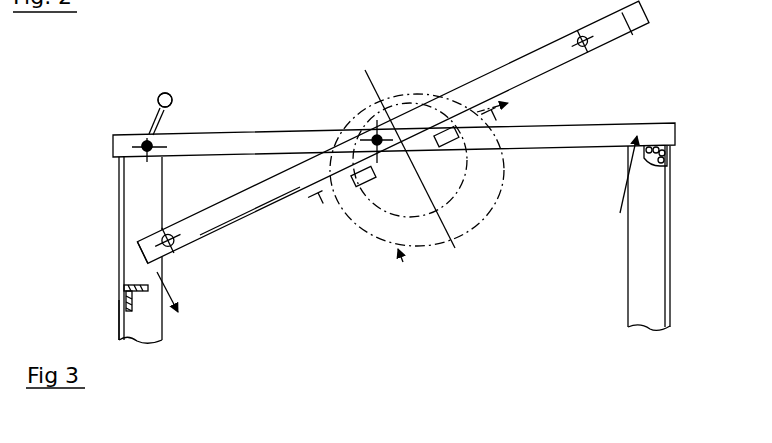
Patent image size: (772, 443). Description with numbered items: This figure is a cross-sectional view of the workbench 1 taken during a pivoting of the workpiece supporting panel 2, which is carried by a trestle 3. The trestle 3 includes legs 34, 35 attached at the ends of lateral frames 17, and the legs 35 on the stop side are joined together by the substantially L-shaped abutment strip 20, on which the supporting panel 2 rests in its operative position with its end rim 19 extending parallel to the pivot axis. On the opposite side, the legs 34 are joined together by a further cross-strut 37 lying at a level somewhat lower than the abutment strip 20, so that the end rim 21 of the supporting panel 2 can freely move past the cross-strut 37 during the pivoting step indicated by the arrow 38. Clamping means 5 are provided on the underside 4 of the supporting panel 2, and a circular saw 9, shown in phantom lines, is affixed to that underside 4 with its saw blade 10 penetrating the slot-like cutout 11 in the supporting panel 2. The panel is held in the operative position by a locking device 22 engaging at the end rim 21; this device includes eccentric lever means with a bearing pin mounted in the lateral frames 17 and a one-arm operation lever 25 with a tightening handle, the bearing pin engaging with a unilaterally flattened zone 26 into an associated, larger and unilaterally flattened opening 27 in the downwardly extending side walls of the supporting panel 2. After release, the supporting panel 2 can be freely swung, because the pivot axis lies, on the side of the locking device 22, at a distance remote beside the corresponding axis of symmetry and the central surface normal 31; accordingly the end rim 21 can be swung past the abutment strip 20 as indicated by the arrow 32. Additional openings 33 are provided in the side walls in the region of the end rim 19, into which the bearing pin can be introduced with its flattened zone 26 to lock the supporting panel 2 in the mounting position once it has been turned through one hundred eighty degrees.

The workbench 1 is at (282, 75).
The workpiece supporting panel 2 is at (522, 72).
The trestle 3 is at (118, 236).
The underside 4 is at (258, 211).
The clamping means 5 is at (448, 148).
The circular saw 9 is at (408, 268).
The saw blade 10 is at (368, 112).
The slot-like cutout 11 is at (452, 97).
The lateral frames 17 is at (229, 144).
The end rim 19 is at (632, 37).
The abutment strip 20 is at (654, 170).
The end rim 21 is at (158, 263).
The locking device 22 is at (135, 115).
The one-arm operation lever 25 is at (160, 124).
The flattened zone 26 is at (118, 160).
The opening 27 is at (170, 233).
The central surface normal 31 is at (375, 86).
The arrow 32 is at (624, 199).
The additional openings 33 is at (583, 36).
The legs 34 is at (143, 328).
The legs 35 is at (642, 273).
The cross-strut 37 is at (126, 288).
The arrow 38 is at (165, 298).